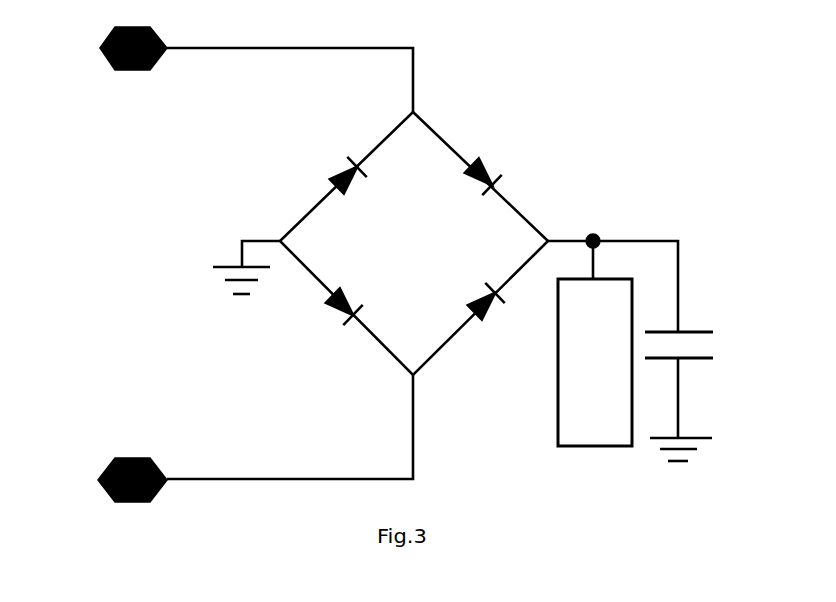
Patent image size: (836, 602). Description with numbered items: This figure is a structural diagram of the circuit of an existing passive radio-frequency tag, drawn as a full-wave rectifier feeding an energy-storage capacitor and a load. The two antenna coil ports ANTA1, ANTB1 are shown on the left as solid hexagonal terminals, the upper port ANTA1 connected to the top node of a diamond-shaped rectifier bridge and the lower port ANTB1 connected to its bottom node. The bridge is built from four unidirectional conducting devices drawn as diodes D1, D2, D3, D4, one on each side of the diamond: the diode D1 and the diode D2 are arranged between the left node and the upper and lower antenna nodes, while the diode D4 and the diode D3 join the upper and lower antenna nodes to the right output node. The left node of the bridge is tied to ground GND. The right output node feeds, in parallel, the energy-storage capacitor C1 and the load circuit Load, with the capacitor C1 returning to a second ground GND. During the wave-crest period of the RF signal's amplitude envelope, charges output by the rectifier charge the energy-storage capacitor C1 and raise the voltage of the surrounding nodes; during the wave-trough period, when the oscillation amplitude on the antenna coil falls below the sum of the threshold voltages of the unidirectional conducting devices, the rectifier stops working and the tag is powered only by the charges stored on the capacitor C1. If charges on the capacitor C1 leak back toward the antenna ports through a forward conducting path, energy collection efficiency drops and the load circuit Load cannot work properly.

The first antenna terminal ANTA1 is at (221, 69).
The second antenna terminal ANTB1 is at (221, 438).
The first diode D1 is at (332, 175).
The second diode D2 is at (338, 320).
The third diode D3 is at (477, 298).
The fourth diode D4 is at (473, 183).
The energy-storage capacitor C1 is at (701, 347).
The ground GND is at (487, 353).
The load circuit Load is at (595, 362).